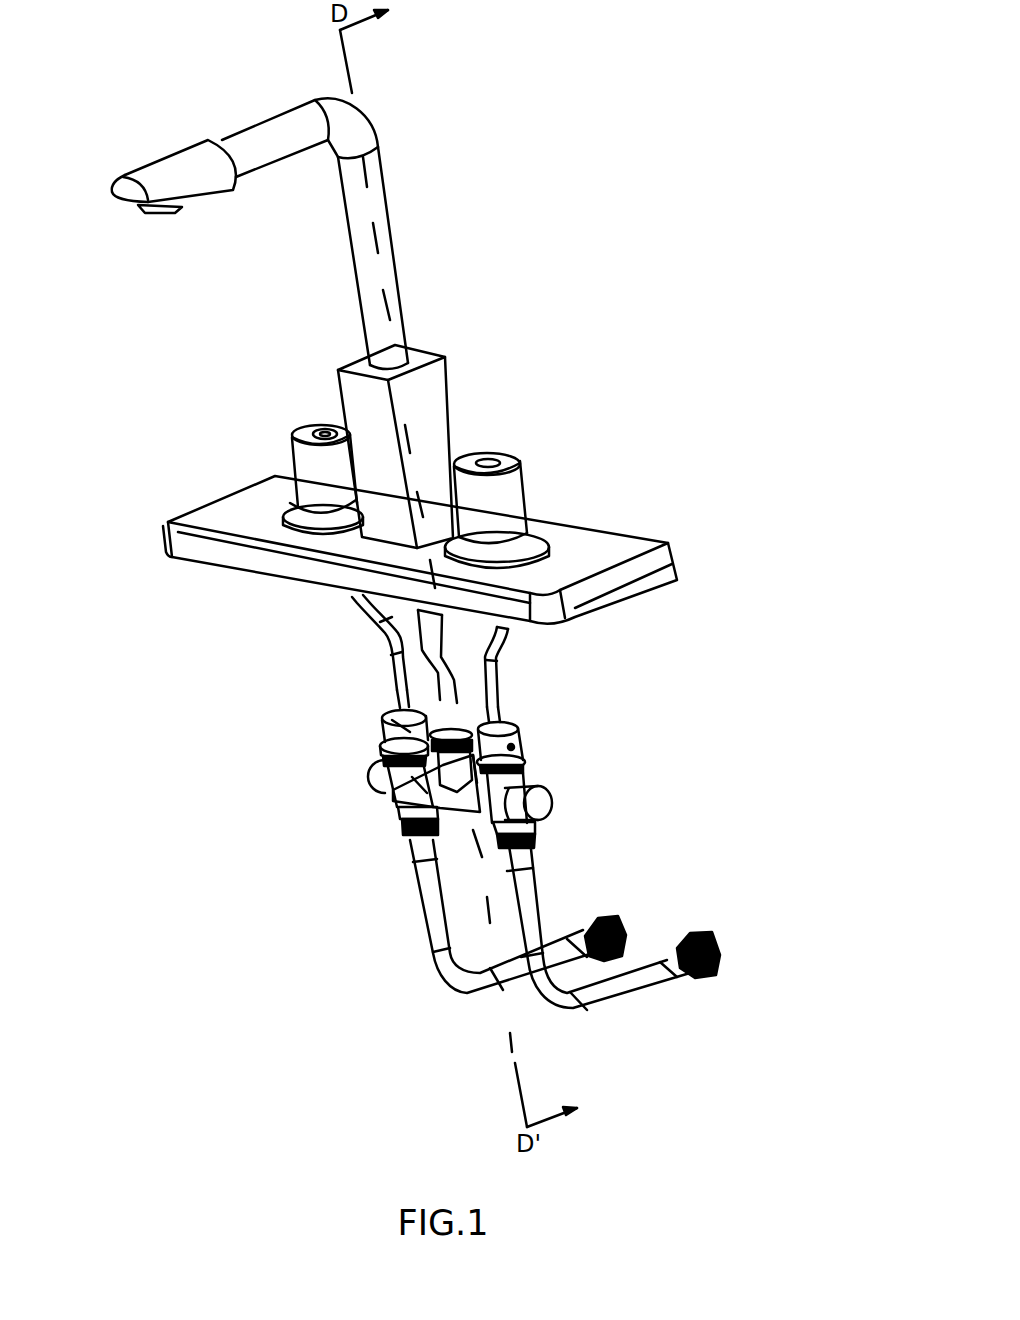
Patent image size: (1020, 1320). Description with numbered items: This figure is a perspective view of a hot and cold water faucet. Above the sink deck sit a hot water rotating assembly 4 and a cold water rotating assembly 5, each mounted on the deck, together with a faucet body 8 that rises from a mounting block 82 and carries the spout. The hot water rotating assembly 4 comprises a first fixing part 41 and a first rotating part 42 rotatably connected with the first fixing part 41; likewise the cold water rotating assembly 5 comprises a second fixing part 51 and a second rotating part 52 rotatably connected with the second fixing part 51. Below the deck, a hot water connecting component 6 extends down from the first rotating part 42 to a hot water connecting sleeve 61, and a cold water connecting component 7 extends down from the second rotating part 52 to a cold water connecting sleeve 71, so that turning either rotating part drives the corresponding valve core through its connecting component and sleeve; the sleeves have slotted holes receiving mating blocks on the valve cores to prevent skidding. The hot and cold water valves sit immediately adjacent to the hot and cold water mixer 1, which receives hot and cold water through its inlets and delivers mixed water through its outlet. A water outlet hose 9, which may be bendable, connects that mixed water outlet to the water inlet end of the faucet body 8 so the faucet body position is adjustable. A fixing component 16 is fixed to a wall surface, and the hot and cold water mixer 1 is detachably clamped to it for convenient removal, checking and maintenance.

The hot and cold water mixer 1 is at (407, 790).
The hot water rotating assembly 4 is at (230, 453).
The first fixing part 41 is at (295, 510).
The first rotating part 42 is at (297, 437).
The cold water rotating assembly 5 is at (599, 500).
The second fixing part 51 is at (530, 537).
The second rotating part 52 is at (513, 483).
The hot water connecting component 6 is at (390, 652).
The hot water connecting sleeve 61 is at (390, 715).
The cold water connecting component 7 is at (495, 700).
The cold water connecting sleeve 71 is at (500, 725).
The faucet body 8 is at (397, 265).
The spout mounting block 82 is at (433, 405).
The water outlet hose 9 is at (443, 628).
The fixing component 16 is at (515, 748).